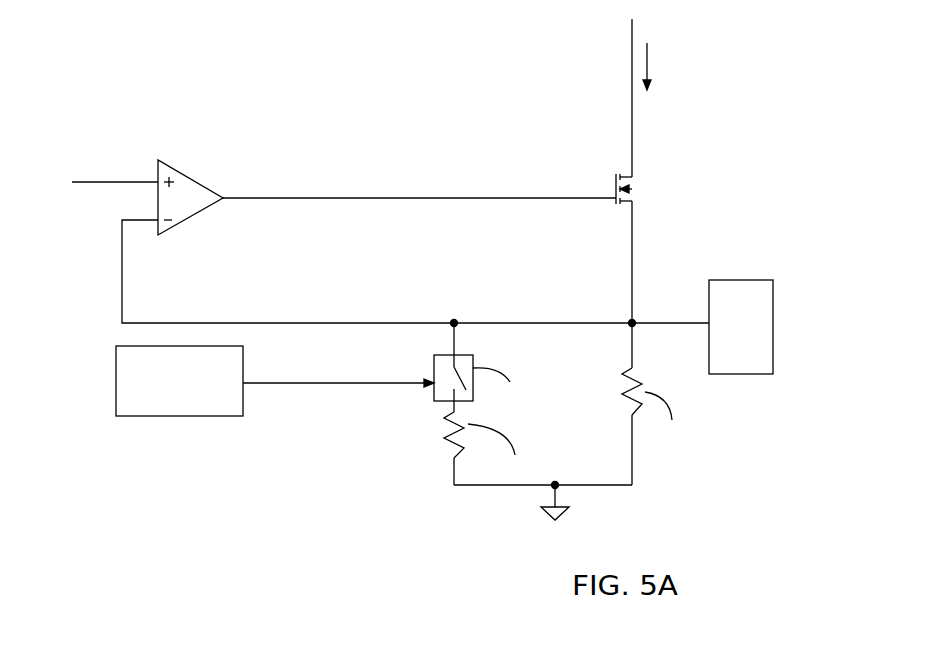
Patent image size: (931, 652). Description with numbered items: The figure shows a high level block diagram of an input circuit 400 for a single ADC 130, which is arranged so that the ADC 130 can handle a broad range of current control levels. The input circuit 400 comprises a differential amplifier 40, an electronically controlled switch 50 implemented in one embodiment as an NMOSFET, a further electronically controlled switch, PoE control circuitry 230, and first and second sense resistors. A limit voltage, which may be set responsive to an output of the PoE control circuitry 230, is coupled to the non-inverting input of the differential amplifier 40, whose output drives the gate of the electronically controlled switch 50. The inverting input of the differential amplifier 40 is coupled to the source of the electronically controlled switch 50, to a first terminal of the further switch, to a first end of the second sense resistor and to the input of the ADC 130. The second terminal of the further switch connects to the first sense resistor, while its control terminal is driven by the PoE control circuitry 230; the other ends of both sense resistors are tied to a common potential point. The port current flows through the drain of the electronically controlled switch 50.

The input circuit 400 is at (90, 52).
The differential amplifier 40 is at (185, 170).
The electronically controlled switch 50 is at (645, 183).
The ADC 130 is at (748, 280).
The PoE control circuitry 230 is at (179, 416).